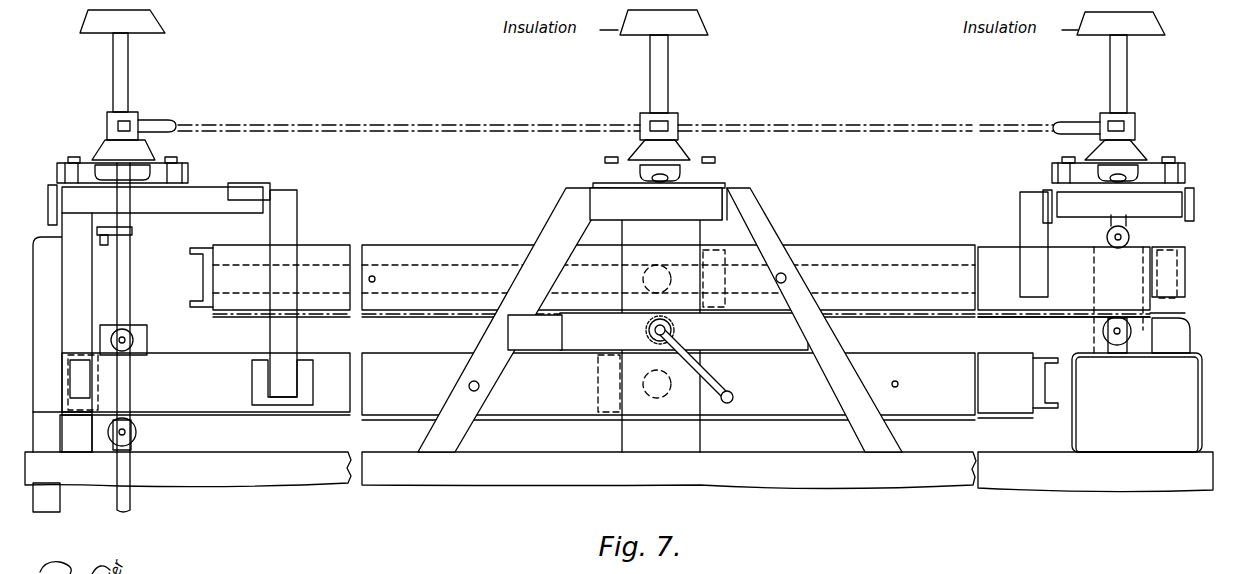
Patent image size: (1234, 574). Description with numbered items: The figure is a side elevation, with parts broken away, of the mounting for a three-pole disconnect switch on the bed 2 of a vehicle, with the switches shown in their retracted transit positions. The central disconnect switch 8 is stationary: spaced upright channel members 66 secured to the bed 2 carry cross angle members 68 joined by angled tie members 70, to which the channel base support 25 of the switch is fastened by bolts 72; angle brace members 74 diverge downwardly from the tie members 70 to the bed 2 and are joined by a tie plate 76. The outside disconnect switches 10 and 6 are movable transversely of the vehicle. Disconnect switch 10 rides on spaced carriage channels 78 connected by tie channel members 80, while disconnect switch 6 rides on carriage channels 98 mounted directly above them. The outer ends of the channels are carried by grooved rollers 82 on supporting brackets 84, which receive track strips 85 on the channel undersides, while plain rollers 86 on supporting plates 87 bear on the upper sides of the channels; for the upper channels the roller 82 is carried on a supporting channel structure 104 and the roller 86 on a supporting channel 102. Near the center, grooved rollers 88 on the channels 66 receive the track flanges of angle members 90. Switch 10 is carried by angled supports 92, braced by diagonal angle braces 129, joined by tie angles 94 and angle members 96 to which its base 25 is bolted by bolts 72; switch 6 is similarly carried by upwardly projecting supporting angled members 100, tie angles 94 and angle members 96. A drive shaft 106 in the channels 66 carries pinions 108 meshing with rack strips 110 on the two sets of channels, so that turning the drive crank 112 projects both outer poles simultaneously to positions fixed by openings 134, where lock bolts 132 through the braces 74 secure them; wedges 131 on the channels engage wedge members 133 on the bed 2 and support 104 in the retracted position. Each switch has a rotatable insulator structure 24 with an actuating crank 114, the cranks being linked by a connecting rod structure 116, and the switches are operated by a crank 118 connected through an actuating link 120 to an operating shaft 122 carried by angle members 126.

The bed 2 is at (425, 486).
The disconnect switch 6 is at (1065, 66).
The disconnect switch 8 is at (690, 66).
The disconnect switch 10 is at (152, 69).
The rotatable insulator structure 24 is at (165, 25).
The channel base support 25 is at (86, 160).
The upright channel members 66 is at (697, 433).
The cross angle members 68 is at (726, 190).
The angled tie members 70 is at (595, 190).
The bolts 72 is at (70, 160).
The angle brace members 74 is at (523, 283).
The tie plate 76 is at (745, 318).
The carriage channels 78 is at (182, 353).
The tie channel members 80 is at (195, 272).
The grooved rollers 82 is at (138, 432).
The supporting brackets 84 is at (125, 445).
The track strips 85 is at (223, 416).
The plain rollers 86 is at (130, 330).
The supporting plates 87 is at (147, 335).
The grooved rollers 88 is at (658, 266).
The angle member 90 is at (375, 245).
The angled supports 92 is at (60, 232).
The tie angles 94 is at (55, 185).
The angle members 96 is at (208, 192).
The carriage channels 98 is at (455, 252).
The supporting angled members 100 is at (1020, 225).
The supporting channel 102 is at (1135, 244).
The supporting channel structure 104 is at (1198, 405).
The drive shaft 106 is at (645, 330).
The pinions 108 is at (680, 330).
The rack strips 110 is at (390, 318).
The drive crank 112 is at (725, 388).
The actuating crank 114 is at (105, 125).
The connecting rod structure 116 is at (295, 125).
The crank 118 is at (133, 231).
The actuating link 120 is at (108, 246).
The operating shaft 122 is at (130, 258).
The angle members 126 is at (60, 500).
The angle braces 129 is at (62, 300).
The wedges 131 is at (62, 413).
The bolts 132 is at (785, 277).
The wedge members 133 is at (78, 445).
The openings 134 is at (376, 279).